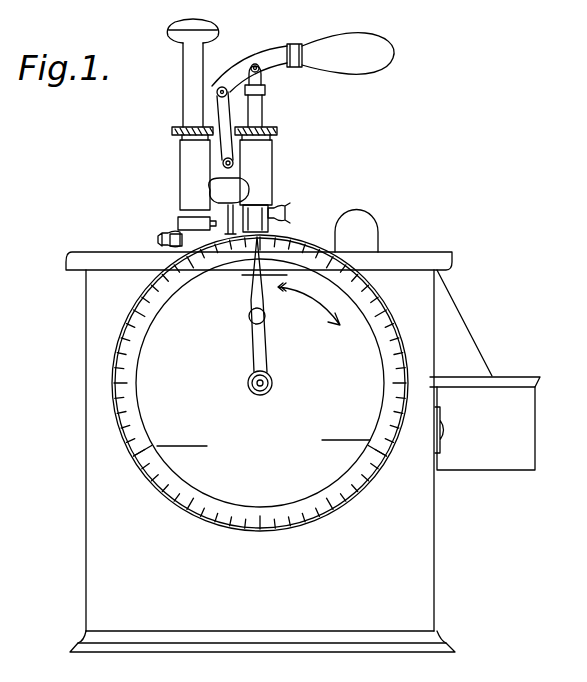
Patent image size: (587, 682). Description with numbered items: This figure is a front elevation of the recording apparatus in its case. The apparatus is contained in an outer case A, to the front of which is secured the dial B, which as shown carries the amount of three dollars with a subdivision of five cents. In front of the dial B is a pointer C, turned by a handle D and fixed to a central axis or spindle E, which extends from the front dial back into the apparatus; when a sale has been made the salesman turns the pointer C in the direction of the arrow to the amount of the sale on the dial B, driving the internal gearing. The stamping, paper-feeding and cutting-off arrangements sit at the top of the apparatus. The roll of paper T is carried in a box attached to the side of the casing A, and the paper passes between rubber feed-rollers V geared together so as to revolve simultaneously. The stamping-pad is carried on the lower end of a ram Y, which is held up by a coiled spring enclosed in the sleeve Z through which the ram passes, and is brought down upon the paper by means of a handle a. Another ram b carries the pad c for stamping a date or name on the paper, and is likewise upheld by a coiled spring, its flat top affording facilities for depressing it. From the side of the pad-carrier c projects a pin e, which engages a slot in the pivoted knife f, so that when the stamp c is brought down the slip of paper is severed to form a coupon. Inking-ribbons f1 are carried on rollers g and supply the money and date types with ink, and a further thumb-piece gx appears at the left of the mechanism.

The outer case A is at (260, 430).
The dial B is at (260, 383).
The pointer C is at (262, 352).
The handle D is at (264, 316).
The central axis or spindle E is at (249, 388).
The roll of paper T is at (477, 338).
The feed-roller V is at (485, 423).
The sleeve Z is at (256, 166).
The ram b is at (190, 100).
The ram Y is at (263, 110).
The handle a is at (303, 62).
The pin e is at (229, 200).
The pad c is at (197, 224).
The pivoted knife f is at (230, 219).
The inking-ribbon f1 is at (219, 225).
The roller g is at (283, 212).
The thumb screw gx is at (160, 239).